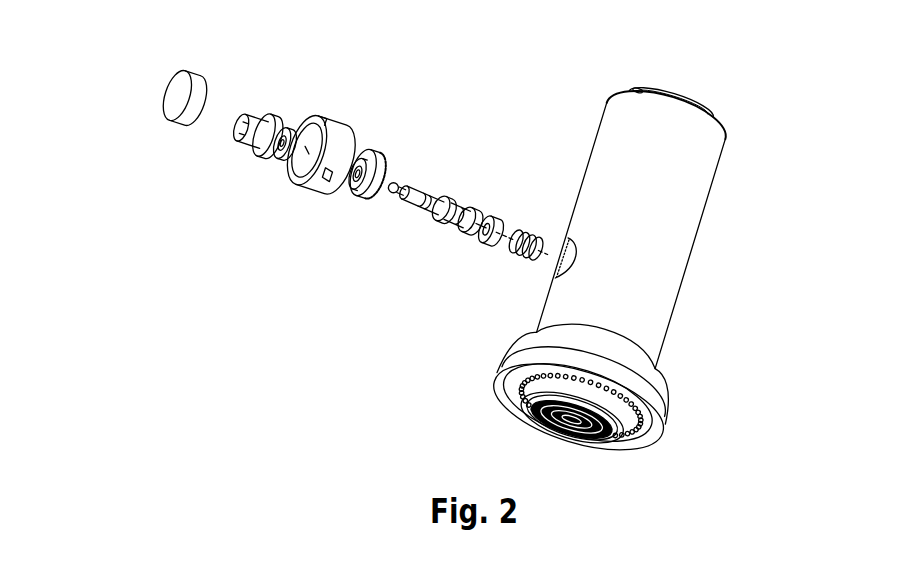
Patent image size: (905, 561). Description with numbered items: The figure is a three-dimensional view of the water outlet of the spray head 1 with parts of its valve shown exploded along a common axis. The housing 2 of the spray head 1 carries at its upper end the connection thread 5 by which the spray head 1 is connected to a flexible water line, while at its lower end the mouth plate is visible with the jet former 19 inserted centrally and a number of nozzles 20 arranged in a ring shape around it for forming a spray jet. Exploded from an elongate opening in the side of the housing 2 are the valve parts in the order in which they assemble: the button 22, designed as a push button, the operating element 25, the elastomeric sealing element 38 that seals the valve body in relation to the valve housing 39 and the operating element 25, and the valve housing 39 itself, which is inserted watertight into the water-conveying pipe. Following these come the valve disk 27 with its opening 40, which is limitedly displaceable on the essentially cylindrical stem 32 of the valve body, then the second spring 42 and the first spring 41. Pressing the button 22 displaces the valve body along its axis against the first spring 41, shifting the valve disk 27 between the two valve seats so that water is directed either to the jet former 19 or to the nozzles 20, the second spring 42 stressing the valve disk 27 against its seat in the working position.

The spray head 1 is at (420, 151).
The housing 2 is at (682, 207).
The connection thread 5 is at (697, 108).
The jet former 19 is at (572, 442).
The nozzles 20 is at (524, 406).
The button 22 is at (172, 93).
The operating element 25 is at (270, 105).
The valve disk 27 is at (385, 167).
The stem 32 is at (433, 190).
The elastomeric sealing element 38 is at (302, 128).
The valve housing 39 is at (348, 133).
The opening of the valve disk 40 is at (350, 198).
The first spring 41 is at (529, 228).
The second spring 42 is at (494, 218).